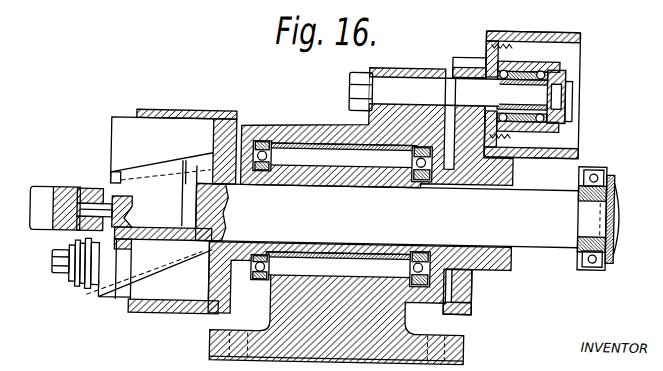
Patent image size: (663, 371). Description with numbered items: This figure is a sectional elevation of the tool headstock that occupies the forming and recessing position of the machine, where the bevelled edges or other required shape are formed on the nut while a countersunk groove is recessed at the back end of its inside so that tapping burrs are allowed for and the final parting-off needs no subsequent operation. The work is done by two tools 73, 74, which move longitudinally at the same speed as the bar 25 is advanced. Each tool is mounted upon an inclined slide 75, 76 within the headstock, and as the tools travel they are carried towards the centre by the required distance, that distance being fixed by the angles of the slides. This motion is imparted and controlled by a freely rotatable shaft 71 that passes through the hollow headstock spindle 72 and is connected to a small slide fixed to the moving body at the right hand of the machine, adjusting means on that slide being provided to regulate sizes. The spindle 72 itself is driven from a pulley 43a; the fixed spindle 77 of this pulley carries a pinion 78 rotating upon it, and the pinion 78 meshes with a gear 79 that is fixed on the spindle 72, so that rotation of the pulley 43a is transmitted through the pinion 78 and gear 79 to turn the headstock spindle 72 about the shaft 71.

The bar 25 is at (40, 213).
The pulley 43a is at (567, 47).
The freely rotatable shaft 71 is at (553, 206).
The hollow headstock spindle 72 is at (315, 167).
The tool 73 is at (83, 287).
The tool 74 is at (95, 212).
The inclined slide 75 is at (125, 286).
The inclined slide 76 is at (165, 176).
The fixed spindle 77 is at (404, 89).
The pinion 78 is at (466, 55).
The gear 79 is at (463, 313).